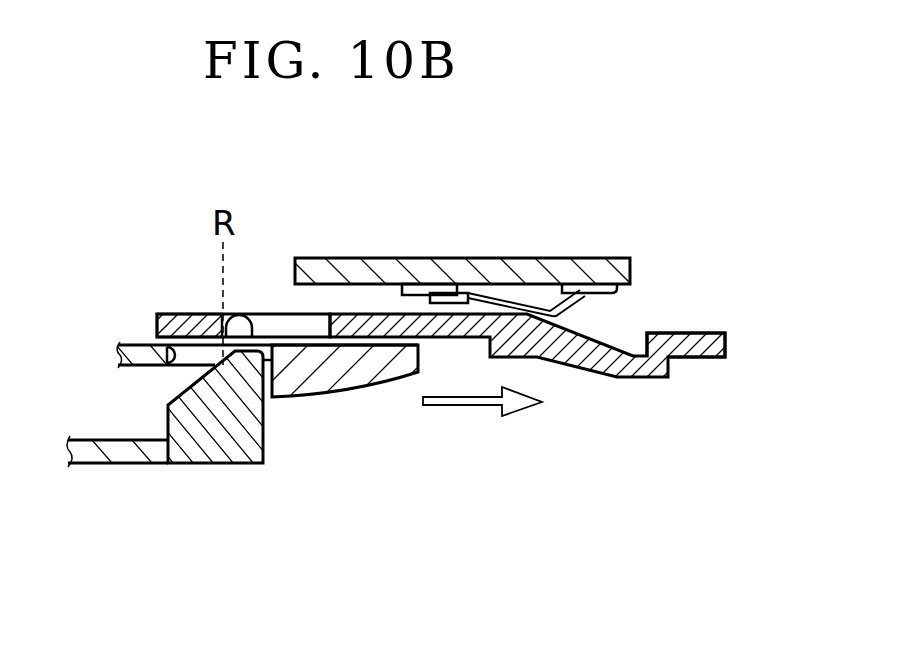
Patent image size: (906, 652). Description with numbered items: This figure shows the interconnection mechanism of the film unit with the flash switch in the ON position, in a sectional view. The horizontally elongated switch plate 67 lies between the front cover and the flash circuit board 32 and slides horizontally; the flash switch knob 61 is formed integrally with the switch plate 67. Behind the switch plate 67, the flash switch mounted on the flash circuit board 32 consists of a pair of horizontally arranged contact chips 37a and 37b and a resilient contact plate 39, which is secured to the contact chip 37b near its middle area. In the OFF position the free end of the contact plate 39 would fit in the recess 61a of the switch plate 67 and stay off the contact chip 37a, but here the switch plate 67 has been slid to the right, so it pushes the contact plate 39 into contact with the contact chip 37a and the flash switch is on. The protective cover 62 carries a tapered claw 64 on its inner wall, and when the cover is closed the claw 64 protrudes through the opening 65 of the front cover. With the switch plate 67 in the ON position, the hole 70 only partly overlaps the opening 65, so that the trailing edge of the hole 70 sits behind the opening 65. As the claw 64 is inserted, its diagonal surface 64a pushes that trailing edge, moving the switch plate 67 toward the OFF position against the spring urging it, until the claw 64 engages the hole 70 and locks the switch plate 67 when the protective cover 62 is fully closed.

The flash circuit board 32 is at (594, 224).
The contact chip 37b is at (410, 252).
The contact chip 37a is at (613, 300).
The contact plate 39 is at (515, 267).
The opening 65 is at (163, 313).
The switch plate 67 is at (180, 286).
The hole 70 is at (253, 313).
The flash switch knob 61 is at (643, 379).
The recess 61a is at (634, 347).
The claw 64 is at (263, 420).
The diagonal surface 64a is at (190, 386).
The protective cover 62 is at (113, 482).